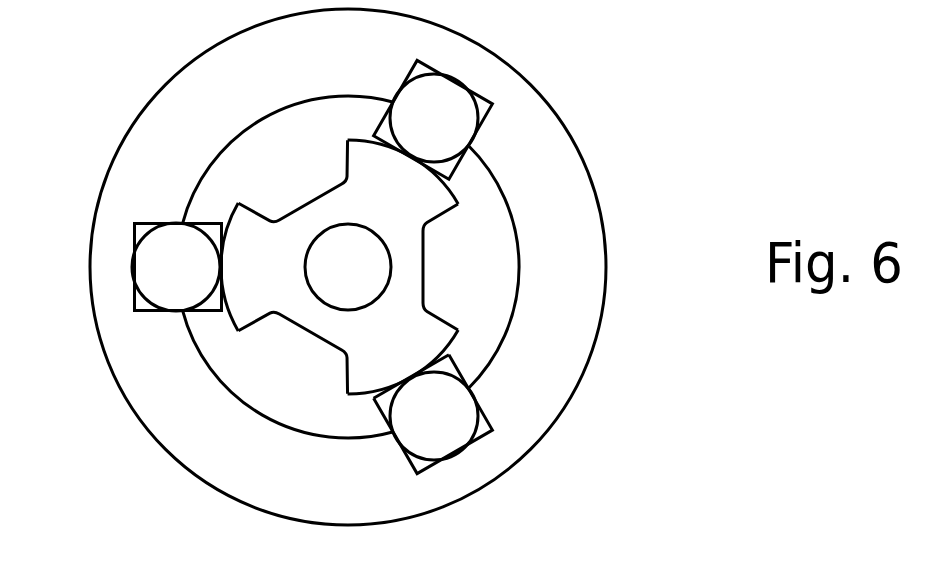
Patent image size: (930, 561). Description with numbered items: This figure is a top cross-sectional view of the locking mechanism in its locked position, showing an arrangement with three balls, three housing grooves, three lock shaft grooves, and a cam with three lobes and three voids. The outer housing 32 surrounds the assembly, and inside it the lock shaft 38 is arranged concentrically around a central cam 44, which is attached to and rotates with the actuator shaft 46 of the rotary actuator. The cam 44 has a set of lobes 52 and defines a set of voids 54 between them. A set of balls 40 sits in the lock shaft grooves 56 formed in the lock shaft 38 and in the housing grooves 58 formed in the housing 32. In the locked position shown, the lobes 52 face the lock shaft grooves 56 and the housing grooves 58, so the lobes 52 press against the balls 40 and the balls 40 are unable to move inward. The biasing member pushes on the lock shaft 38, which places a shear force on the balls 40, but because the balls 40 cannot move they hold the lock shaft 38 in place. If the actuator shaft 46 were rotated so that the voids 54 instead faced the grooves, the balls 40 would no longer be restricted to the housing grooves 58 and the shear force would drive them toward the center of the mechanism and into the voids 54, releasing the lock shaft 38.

The housing 32 is at (143, 185).
The lock shaft 38 is at (495, 257).
The balls 40 is at (430, 123).
The cam 44 is at (313, 320).
The actuator shaft 46 is at (362, 282).
The lobes 52 is at (245, 287).
The voids 54 is at (277, 182).
The lock shaft grooves 56 is at (438, 369).
The housing grooves 58 is at (490, 428).